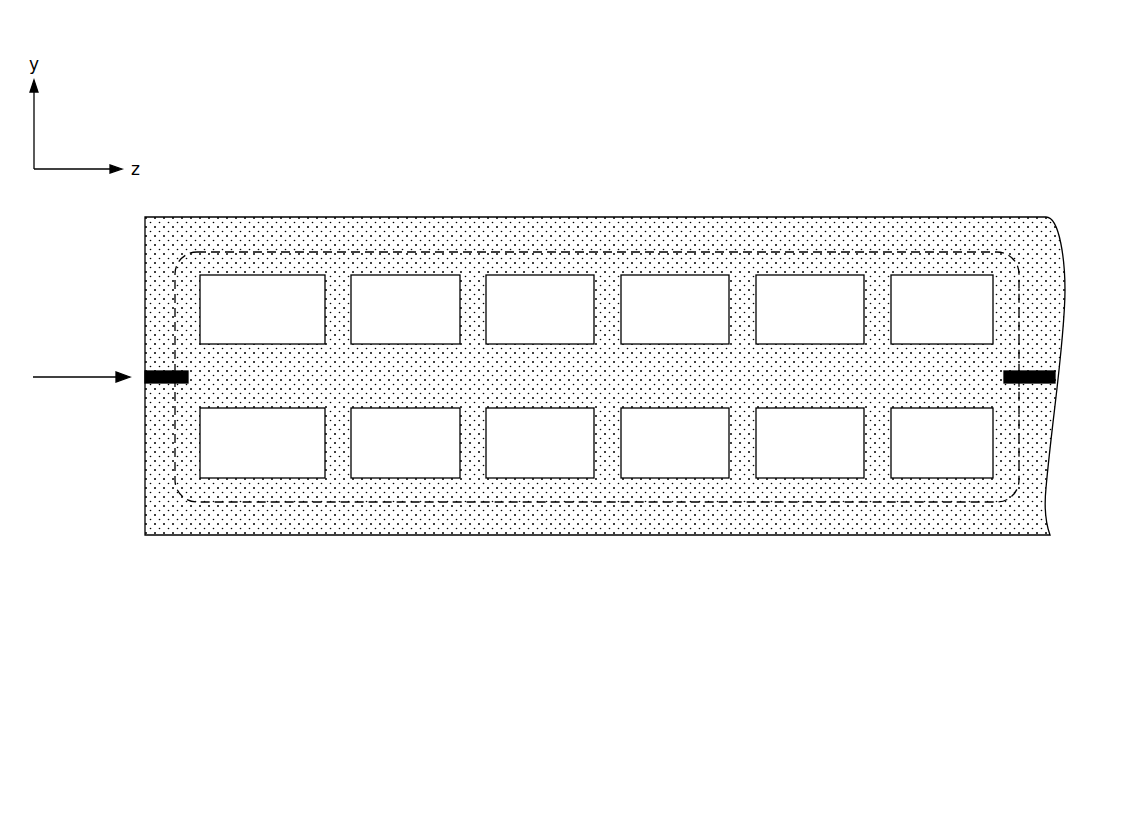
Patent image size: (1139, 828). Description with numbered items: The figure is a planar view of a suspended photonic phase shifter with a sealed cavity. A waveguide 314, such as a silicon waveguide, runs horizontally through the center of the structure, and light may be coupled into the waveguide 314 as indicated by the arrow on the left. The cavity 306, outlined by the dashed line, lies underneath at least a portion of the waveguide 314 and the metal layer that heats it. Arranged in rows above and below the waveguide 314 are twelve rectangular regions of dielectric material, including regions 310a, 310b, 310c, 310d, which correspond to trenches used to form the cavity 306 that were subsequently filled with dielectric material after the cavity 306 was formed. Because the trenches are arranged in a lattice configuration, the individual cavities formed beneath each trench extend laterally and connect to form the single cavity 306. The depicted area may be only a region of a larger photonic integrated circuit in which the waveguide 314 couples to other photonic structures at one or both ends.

The cavity 306 is at (816, 259).
The region of dielectric material 310a is at (262, 312).
The region of dielectric material 310b is at (404, 312).
The region of dielectric material 310c is at (262, 443).
The region of dielectric material 310d is at (618, 526).
The waveguide 314 is at (1040, 385).